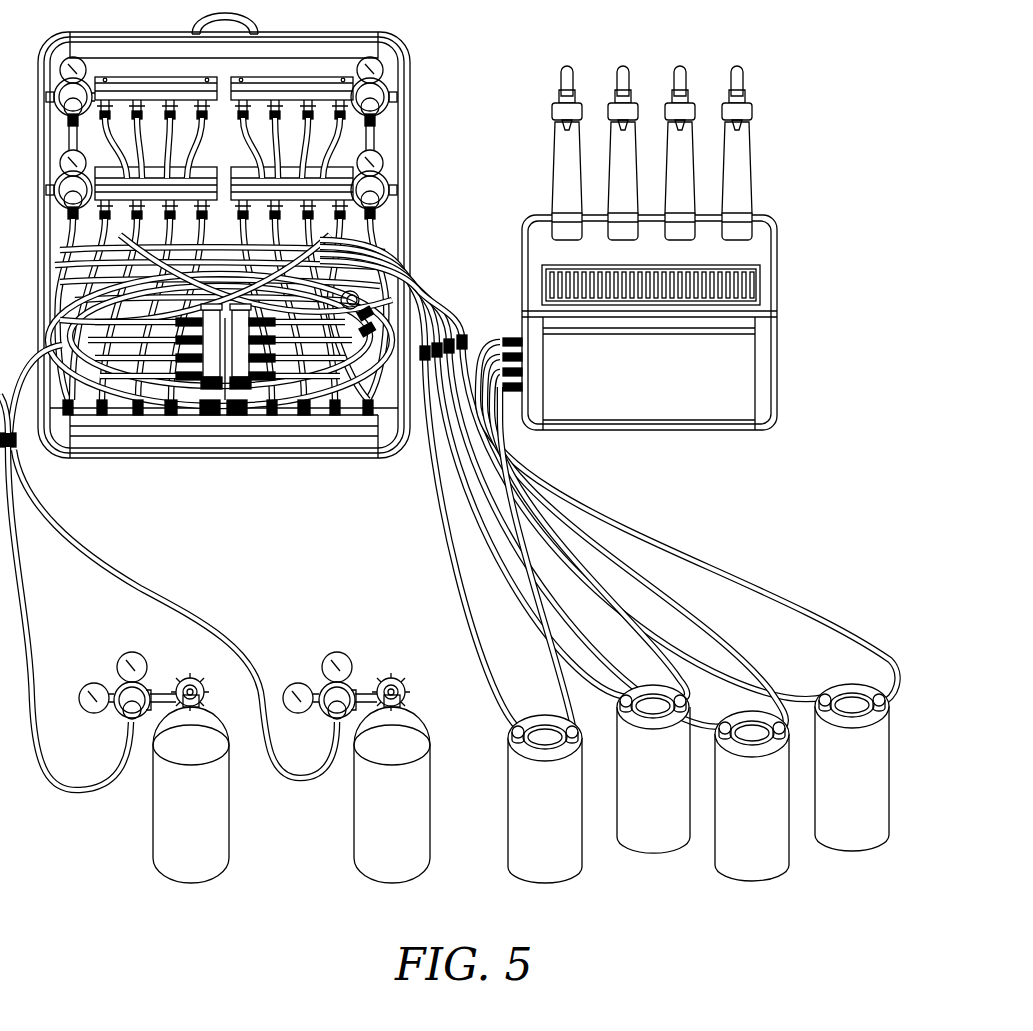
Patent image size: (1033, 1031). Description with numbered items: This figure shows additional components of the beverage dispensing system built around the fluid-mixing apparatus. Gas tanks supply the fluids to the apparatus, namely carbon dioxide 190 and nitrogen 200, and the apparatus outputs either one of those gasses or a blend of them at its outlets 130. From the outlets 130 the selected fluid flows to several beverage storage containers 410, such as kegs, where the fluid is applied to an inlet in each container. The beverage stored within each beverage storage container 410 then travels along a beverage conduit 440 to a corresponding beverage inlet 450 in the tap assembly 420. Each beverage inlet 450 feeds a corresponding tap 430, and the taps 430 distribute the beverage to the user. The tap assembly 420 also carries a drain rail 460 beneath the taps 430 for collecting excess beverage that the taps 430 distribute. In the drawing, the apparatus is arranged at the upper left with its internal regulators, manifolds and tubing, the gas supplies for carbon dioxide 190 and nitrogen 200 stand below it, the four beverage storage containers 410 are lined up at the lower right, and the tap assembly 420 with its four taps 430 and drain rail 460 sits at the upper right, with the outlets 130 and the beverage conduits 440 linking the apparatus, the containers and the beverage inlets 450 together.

The outlets 130 is at (436, 292).
The carbon dioxide 190 is at (355, 810).
The nitrogen 200 is at (155, 828).
The beverage storage containers 410 is at (545, 855).
The tap assembly 420 is at (674, 345).
The taps 430 is at (683, 62).
The beverage conduit 440 is at (633, 530).
The beverage inlet 450 is at (537, 443).
The drain rail 460 is at (757, 283).